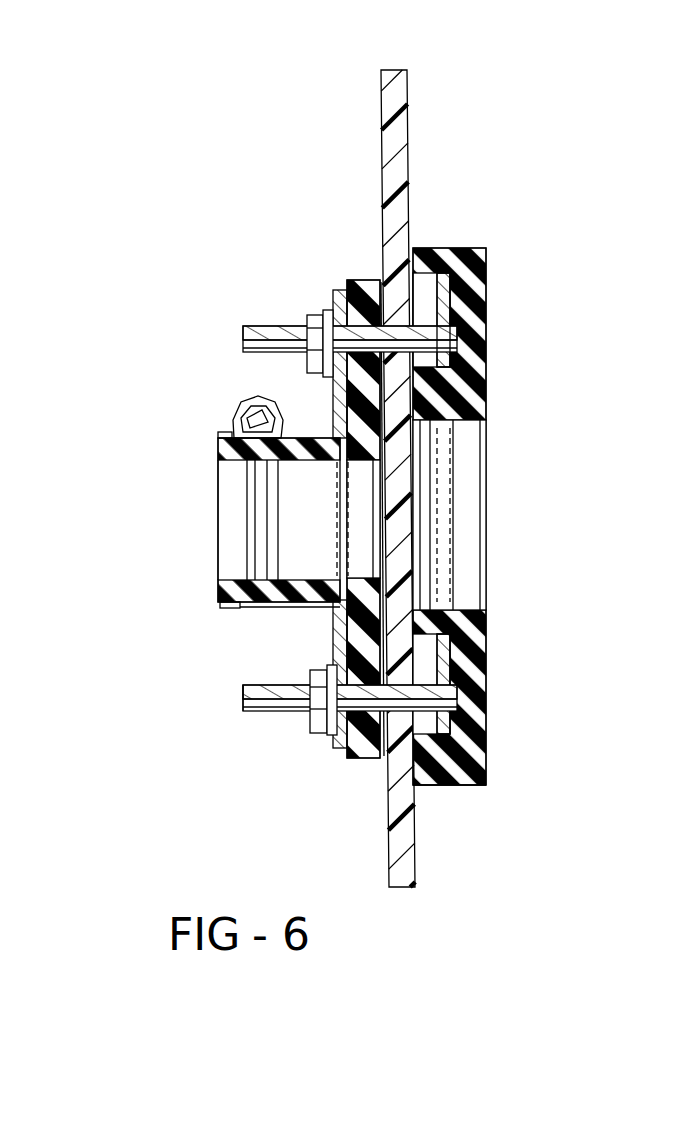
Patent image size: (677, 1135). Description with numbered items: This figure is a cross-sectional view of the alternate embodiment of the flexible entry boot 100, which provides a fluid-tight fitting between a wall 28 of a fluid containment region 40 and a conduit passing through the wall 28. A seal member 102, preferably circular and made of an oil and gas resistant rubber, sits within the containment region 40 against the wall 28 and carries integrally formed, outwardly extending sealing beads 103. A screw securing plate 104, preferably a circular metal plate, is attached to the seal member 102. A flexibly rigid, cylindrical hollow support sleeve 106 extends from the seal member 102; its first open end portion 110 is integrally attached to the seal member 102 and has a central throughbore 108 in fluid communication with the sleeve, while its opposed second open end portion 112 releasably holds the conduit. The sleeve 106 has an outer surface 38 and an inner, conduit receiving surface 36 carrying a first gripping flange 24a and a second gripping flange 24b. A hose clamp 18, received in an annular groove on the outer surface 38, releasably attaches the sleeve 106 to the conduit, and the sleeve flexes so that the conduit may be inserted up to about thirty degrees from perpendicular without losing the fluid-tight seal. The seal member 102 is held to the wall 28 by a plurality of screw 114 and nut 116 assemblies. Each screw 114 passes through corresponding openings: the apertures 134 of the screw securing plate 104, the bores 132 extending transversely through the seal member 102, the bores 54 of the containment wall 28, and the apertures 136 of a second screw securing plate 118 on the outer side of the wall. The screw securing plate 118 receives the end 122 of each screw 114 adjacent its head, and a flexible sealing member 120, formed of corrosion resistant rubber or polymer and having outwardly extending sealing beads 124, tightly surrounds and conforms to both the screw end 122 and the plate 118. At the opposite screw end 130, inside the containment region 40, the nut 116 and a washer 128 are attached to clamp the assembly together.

The wall 28 is at (395, 70).
The screw securing plate 118 is at (486, 282).
The flexible sealing member 120 is at (468, 788).
The end of screw 122 is at (486, 328).
The bores 54 is at (486, 310).
The sealing beads 124 is at (417, 760).
The seal member 102 is at (352, 282).
The sealing beads 103 is at (376, 283).
The first open end portion 110 is at (343, 460).
The bores 132 is at (338, 288).
The central throughbore 108 is at (318, 460).
The inner conduit receiving surface 36 is at (298, 470).
The outer surface 38 is at (326, 438).
The gripping flange 24a is at (247, 501).
The second gripping flange 24b is at (269, 546).
The second open end portion 112 is at (217, 470).
The hollow support sleeve 106 is at (290, 604).
The fluid containment region 40 is at (157, 664).
The hose clamp 18 is at (247, 400).
The nut 116 is at (305, 317).
The apertures 136 is at (486, 358).
The screw 114 is at (264, 720).
The screw end 130 is at (238, 700).
The apertures 134 is at (334, 690).
The washer 128 is at (332, 724).
The screw securing plate 104 is at (335, 736).
The flexible entry boot 100 is at (586, 186).